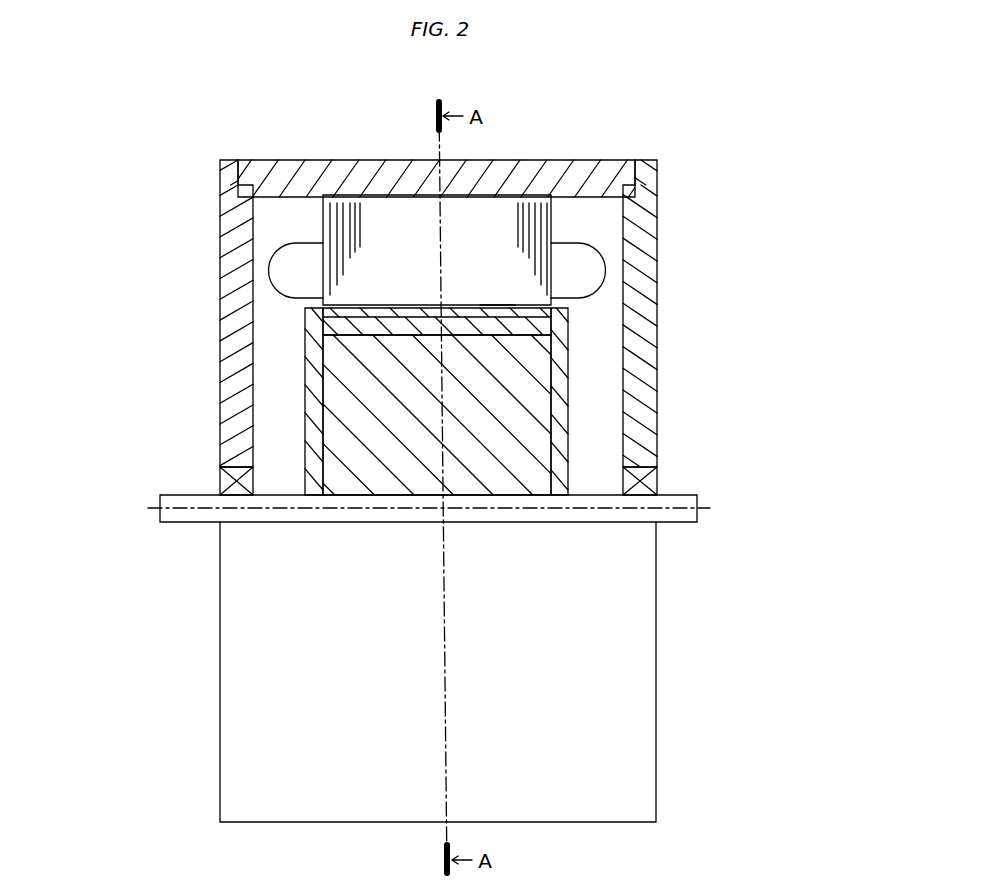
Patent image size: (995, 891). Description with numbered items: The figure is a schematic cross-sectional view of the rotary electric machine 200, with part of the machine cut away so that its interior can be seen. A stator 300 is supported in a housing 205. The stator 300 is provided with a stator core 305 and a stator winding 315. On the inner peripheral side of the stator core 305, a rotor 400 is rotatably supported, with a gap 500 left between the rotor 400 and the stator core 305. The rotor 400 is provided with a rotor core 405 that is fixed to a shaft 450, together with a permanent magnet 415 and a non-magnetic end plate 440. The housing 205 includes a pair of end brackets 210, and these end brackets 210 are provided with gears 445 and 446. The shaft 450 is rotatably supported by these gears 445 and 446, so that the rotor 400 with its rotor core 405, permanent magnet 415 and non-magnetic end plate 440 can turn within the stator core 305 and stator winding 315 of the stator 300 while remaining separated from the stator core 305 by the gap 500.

The rotary electric machine 200 is at (441, 291).
The housing 205 is at (305, 188).
The end bracket 210 is at (230, 382).
The stator 300 is at (467, 210).
The stator core 305 is at (400, 218).
The stator winding 315 is at (283, 268).
The rotor 400 is at (482, 466).
The rotor core 405 is at (340, 478).
The permanent magnet 415 is at (397, 325).
The non-magnetic end plate 440 is at (310, 450).
The gear 445 is at (227, 478).
The gear 446 is at (648, 480).
The shaft 450 is at (180, 515).
The gap 500 is at (497, 303).